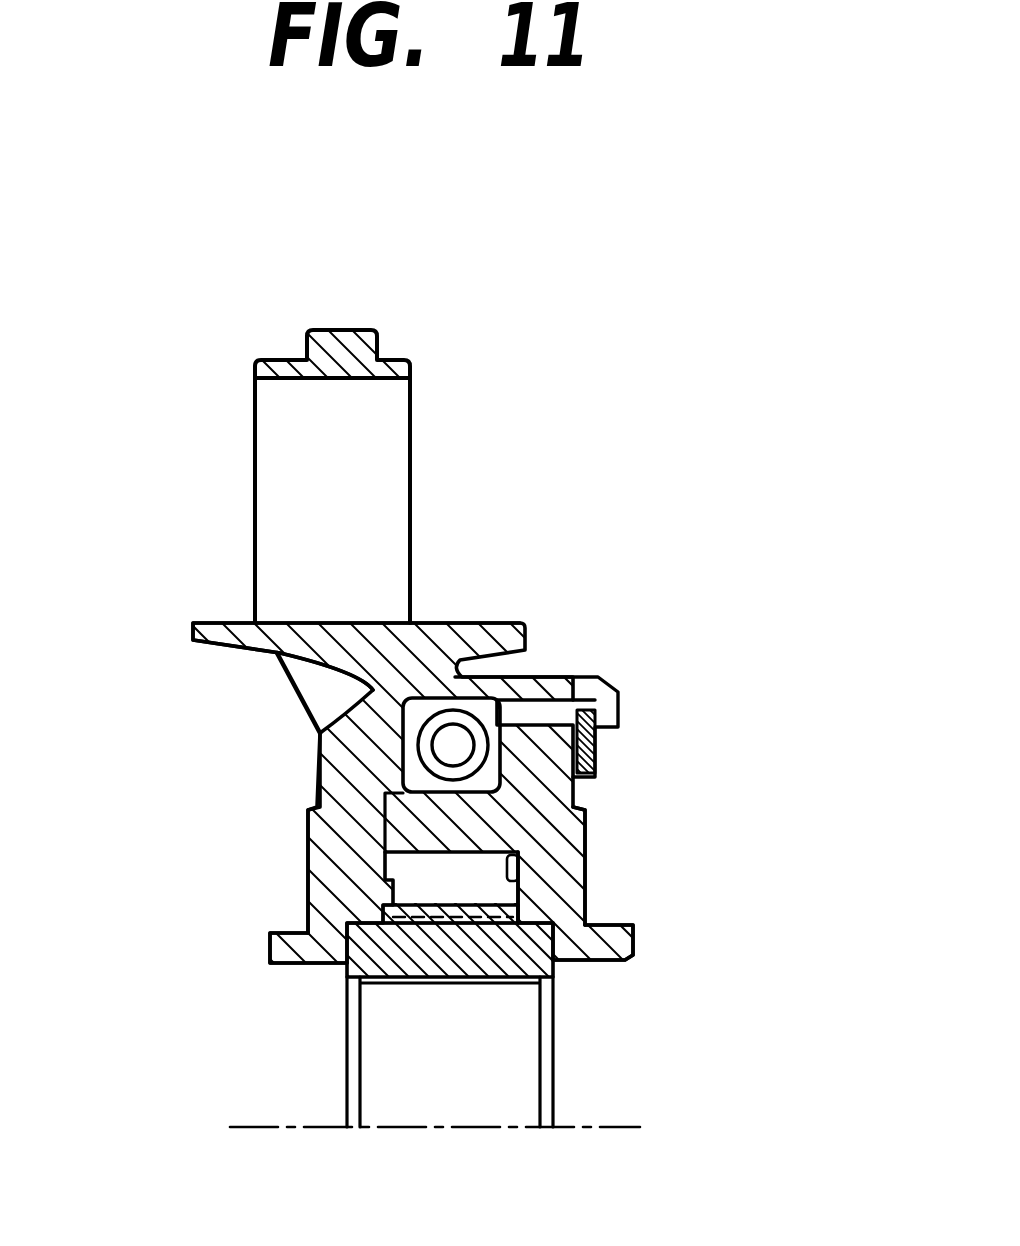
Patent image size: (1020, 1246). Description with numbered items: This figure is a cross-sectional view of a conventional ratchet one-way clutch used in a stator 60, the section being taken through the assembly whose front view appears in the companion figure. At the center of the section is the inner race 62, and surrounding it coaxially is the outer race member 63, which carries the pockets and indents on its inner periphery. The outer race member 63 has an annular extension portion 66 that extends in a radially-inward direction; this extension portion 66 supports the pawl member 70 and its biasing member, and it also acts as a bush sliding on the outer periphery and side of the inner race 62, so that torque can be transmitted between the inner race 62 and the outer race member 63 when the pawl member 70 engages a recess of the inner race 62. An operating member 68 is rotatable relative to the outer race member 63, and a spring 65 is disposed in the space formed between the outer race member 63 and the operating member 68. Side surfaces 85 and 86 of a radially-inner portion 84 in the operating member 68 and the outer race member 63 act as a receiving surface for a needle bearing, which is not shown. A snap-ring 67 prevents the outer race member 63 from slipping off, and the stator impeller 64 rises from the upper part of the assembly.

The stator 60 is at (574, 304).
The inner race 62 is at (553, 965).
The outer race member 63 is at (530, 793).
The stator impeller 64 is at (350, 462).
The spring 65 is at (497, 698).
The extension portion 66 is at (563, 868).
The snap-ring 67 is at (600, 750).
The operating member 68 is at (193, 631).
The pawl member 70 is at (487, 882).
The radially-inner portion 84 is at (317, 880).
The side surface 85 is at (317, 805).
The side surface 86 is at (595, 890).